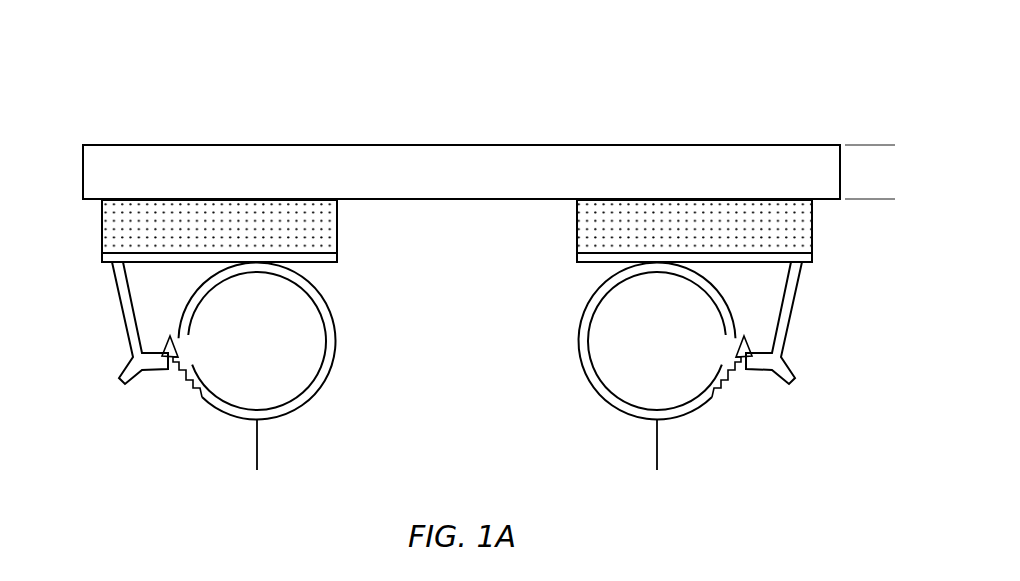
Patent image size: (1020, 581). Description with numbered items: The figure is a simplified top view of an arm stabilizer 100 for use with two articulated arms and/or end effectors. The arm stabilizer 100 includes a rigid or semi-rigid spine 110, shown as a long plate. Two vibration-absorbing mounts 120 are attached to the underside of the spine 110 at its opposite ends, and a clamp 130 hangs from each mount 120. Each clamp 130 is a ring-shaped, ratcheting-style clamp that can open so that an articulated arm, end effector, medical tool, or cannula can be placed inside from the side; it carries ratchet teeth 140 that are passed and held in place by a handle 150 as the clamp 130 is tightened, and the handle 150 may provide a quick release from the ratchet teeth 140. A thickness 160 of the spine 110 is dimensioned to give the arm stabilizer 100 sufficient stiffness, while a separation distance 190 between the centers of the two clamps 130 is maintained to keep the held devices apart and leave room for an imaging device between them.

The arm stabilizer 100 is at (126, 56).
The spine 110 is at (732, 145).
The vibration-absorbing mount 120 is at (577, 216).
The clamp 130 is at (335, 362).
The ratchet teeth 140 is at (192, 398).
The handle 150 is at (122, 372).
The thickness 160 is at (874, 122).
The separation distance 190 is at (259, 450).